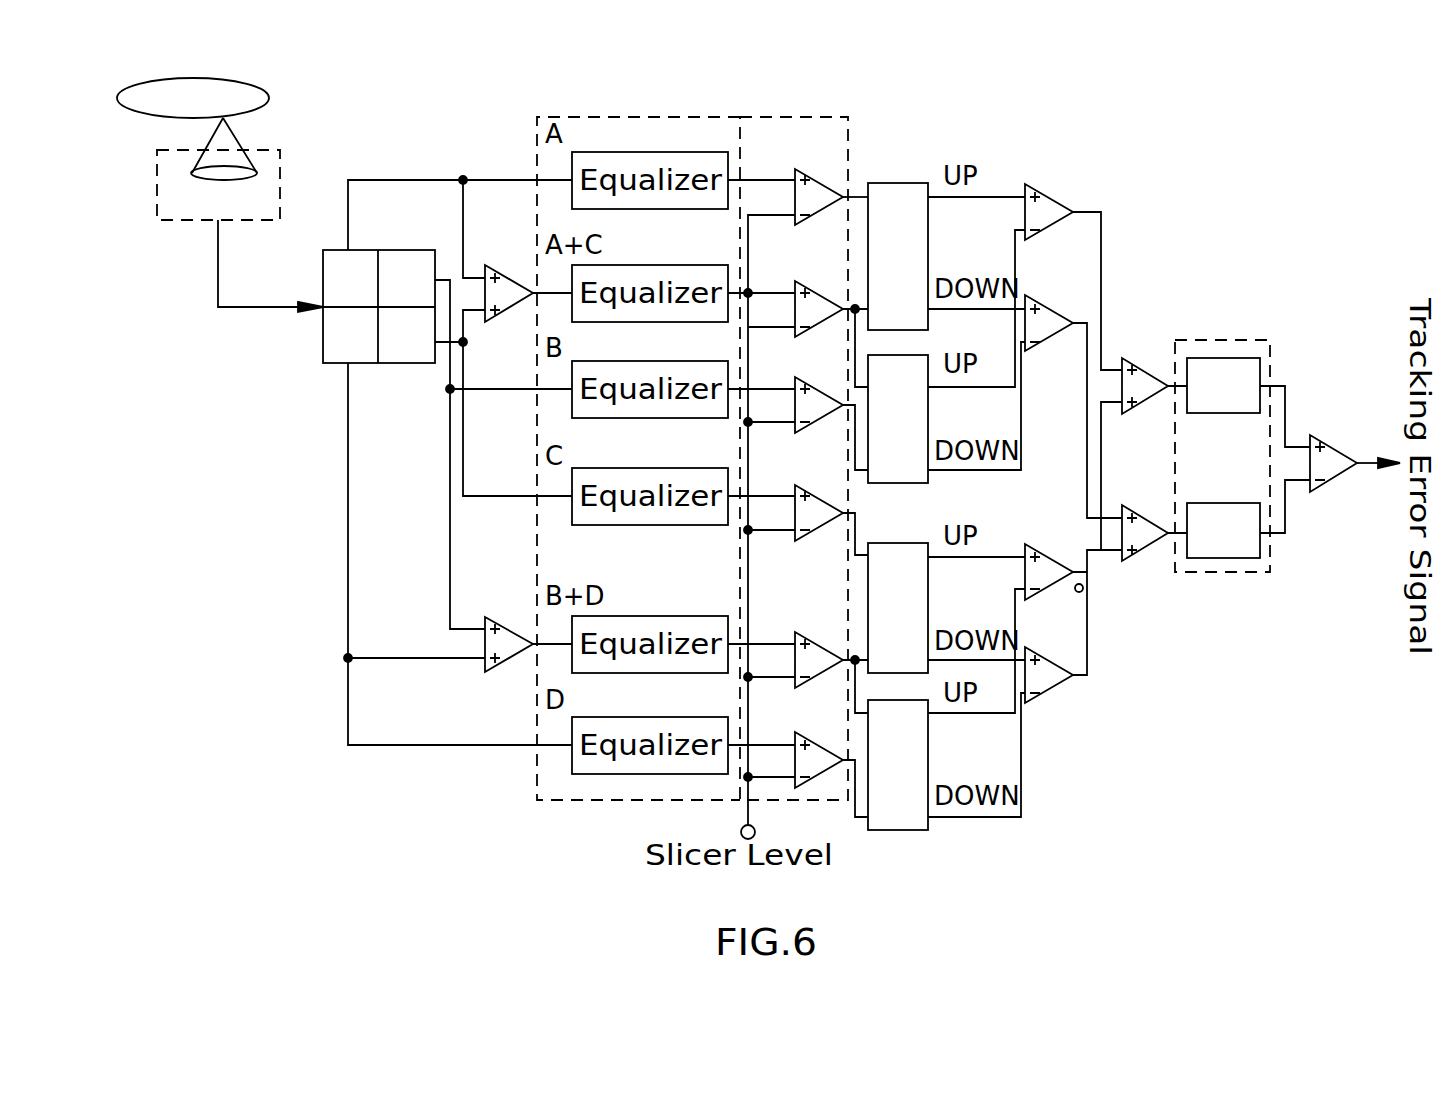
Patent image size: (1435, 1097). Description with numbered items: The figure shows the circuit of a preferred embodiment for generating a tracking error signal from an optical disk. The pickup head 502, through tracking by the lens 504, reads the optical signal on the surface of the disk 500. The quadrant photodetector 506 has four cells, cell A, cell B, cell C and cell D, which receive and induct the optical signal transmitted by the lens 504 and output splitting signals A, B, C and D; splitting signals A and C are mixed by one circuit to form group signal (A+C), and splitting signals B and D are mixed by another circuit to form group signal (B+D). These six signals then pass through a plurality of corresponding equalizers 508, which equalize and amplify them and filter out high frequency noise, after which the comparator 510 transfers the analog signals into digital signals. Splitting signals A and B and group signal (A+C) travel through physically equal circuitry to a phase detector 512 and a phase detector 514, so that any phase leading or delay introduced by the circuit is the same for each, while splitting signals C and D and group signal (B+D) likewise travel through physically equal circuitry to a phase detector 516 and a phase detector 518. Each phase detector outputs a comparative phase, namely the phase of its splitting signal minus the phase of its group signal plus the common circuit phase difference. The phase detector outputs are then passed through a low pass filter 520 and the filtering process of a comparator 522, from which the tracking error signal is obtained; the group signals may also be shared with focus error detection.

The disk 500 is at (240, 78).
The pickup head 502 is at (280, 175).
The lens 504 is at (238, 133).
The quadrant photodetector 506 is at (322, 350).
The equalizers 508 is at (588, 117).
The comparator 510 is at (782, 117).
The phase detector 512 is at (898, 256).
The phase detector 514 is at (898, 419).
The phase detector 516 is at (898, 608).
The phase detector 518 is at (898, 765).
The low pass filter 520 is at (1215, 340).
The comparator 522 is at (1313, 435).